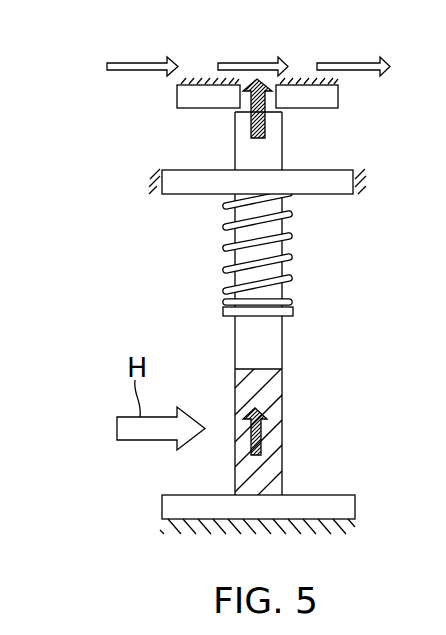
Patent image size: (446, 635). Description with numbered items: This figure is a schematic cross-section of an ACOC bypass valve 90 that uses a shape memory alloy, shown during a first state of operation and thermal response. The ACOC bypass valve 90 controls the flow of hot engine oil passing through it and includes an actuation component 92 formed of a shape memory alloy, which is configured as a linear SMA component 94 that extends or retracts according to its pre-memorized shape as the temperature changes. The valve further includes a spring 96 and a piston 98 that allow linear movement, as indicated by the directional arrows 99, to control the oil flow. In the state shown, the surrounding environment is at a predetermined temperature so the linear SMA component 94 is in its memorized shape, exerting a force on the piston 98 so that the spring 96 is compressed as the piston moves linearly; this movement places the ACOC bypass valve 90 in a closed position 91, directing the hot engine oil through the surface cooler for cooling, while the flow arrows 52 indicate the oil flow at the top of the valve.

The flow 52 is at (250, 60).
The ACOC bypass valve 90 is at (117, 93).
The closed position 91 is at (125, 120).
The actuation component 92 is at (272, 460).
The linear SMA component 94 is at (282, 383).
The spring 96 is at (283, 238).
The piston 98 is at (272, 140).
The directional arrows 99 is at (248, 126).